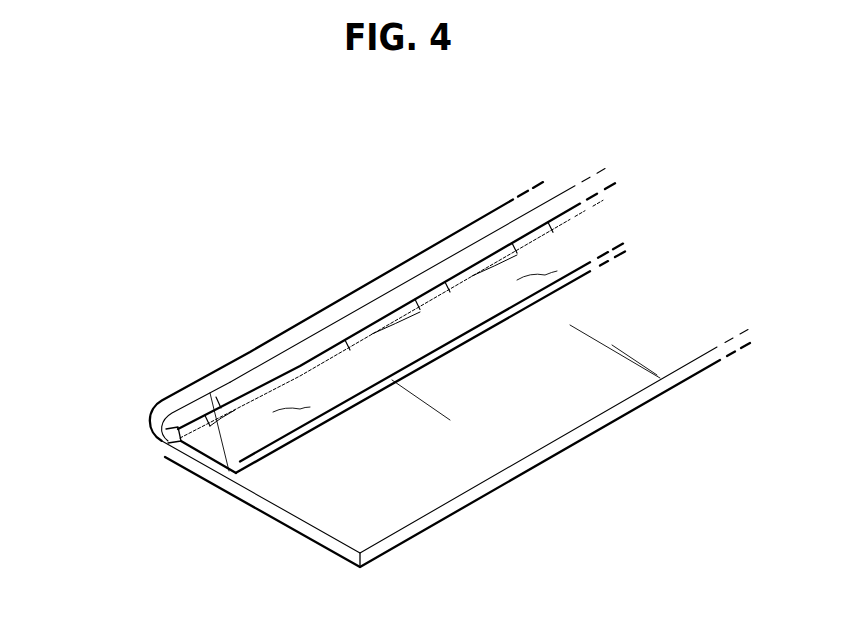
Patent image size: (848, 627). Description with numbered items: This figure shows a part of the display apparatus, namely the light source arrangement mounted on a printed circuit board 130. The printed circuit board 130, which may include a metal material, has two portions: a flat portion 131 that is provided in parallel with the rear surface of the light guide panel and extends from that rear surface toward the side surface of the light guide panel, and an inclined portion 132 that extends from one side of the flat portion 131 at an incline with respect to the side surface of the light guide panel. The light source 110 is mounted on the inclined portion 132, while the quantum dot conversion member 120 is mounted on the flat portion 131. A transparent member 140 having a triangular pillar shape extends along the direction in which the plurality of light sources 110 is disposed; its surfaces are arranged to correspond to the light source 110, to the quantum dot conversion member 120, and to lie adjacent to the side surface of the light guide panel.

The light source 110 is at (353, 352).
The quantum dot conversion member 120 is at (220, 472).
The printed circuit board 130 is at (86, 385).
The flat portion 131 is at (203, 477).
The inclined portion 132 is at (183, 396).
The transparent member 140 is at (238, 452).